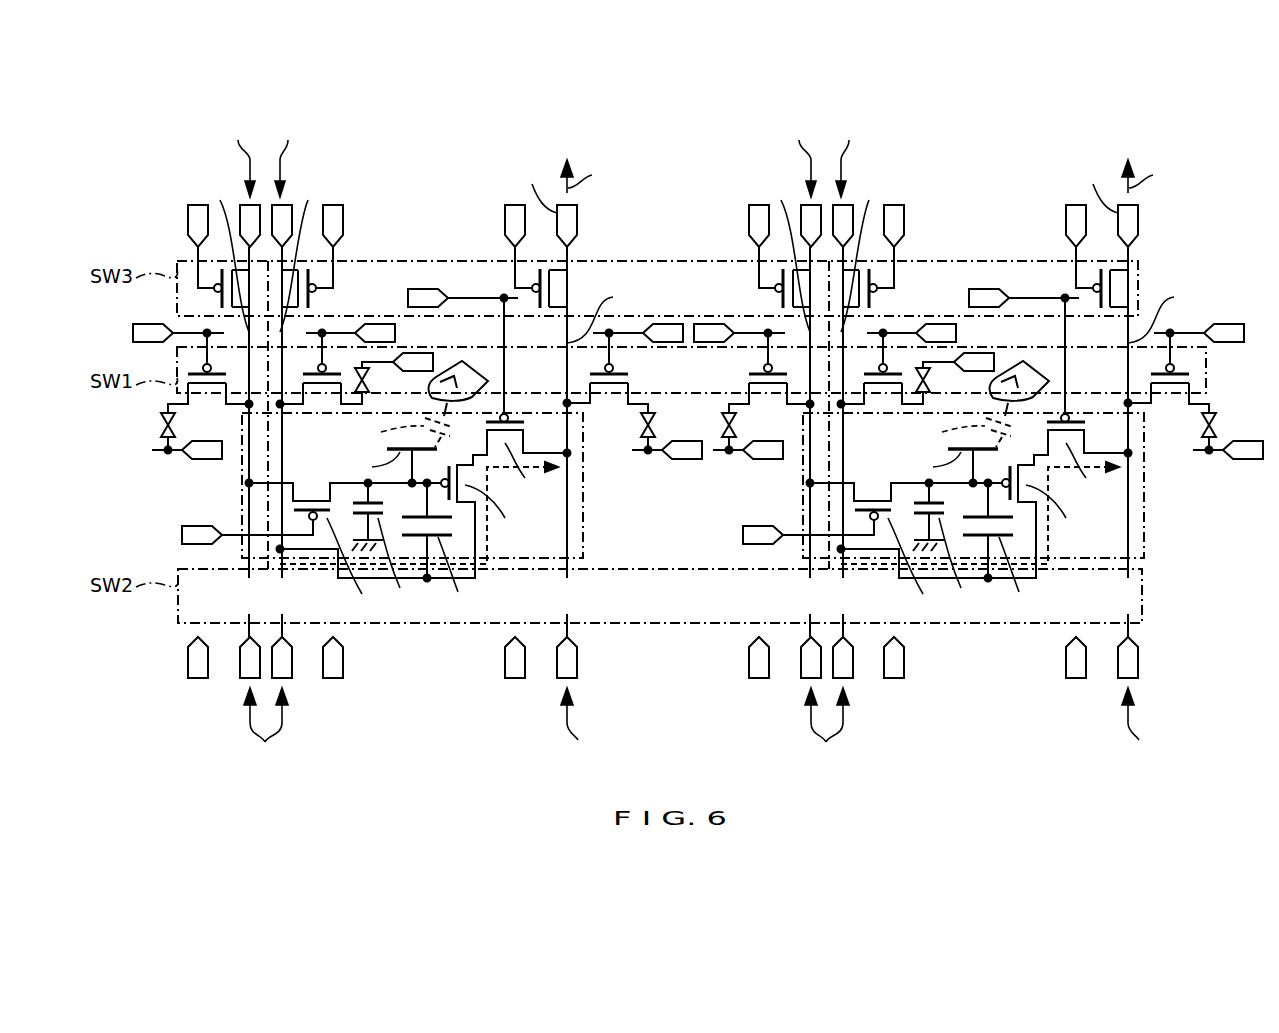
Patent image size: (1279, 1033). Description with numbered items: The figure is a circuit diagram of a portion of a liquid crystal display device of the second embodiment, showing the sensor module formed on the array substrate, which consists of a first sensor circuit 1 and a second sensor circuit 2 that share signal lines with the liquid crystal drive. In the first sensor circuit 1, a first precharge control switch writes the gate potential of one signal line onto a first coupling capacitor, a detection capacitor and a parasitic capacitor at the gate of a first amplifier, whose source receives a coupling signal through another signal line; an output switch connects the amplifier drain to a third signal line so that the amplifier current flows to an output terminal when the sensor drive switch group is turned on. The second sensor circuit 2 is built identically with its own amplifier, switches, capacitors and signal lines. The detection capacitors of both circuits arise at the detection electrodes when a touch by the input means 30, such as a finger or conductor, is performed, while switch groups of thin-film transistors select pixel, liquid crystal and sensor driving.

The first sensor circuit 1 is at (242, 497).
The second sensor circuit 2 is at (978, 443).
The input means 30 is at (482, 366).